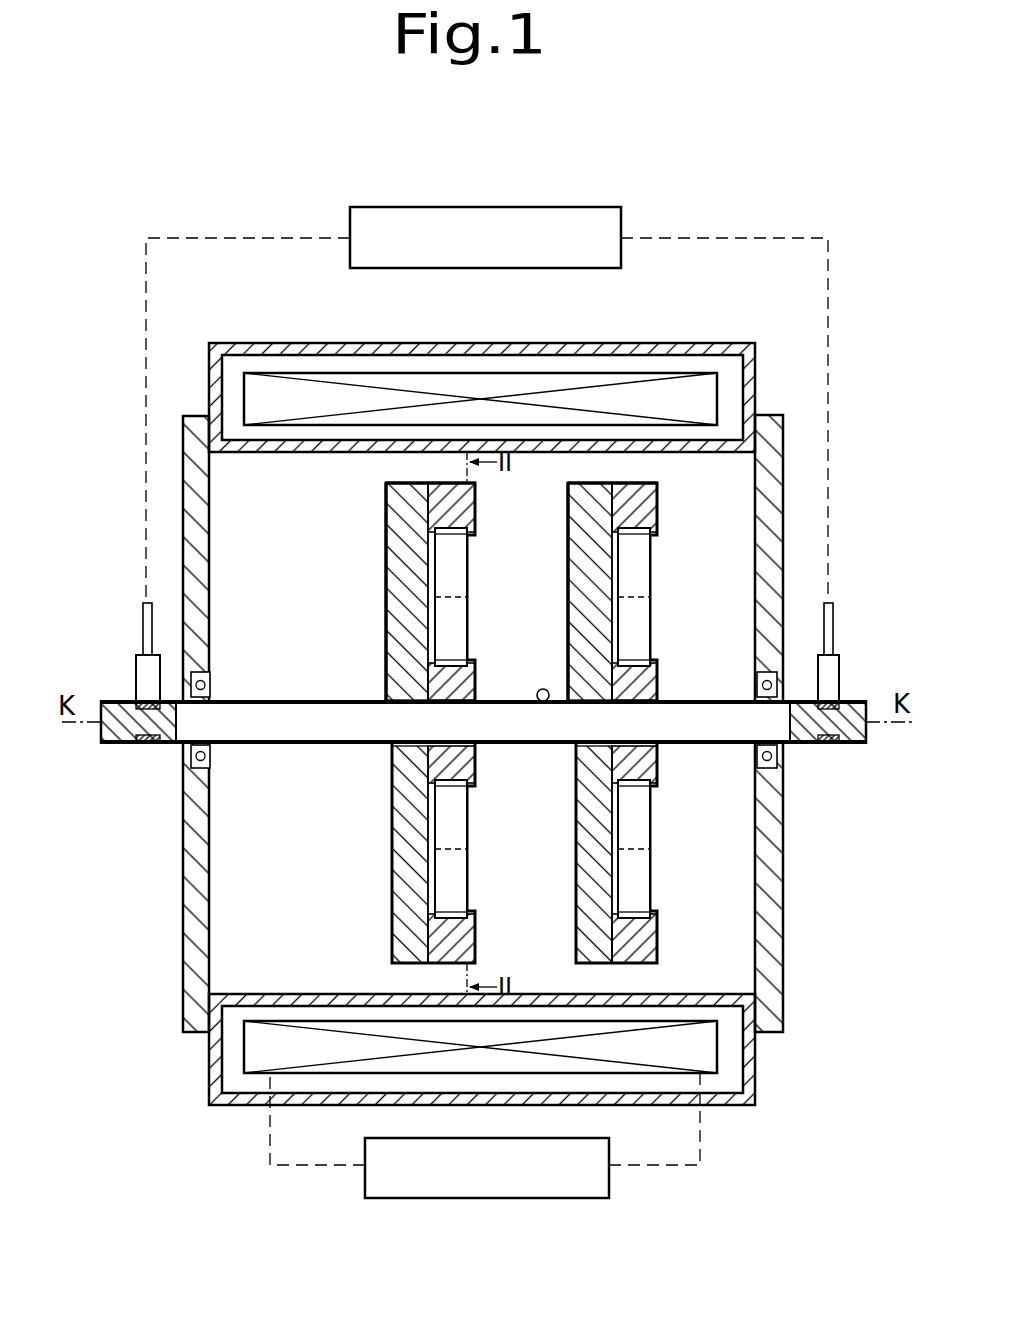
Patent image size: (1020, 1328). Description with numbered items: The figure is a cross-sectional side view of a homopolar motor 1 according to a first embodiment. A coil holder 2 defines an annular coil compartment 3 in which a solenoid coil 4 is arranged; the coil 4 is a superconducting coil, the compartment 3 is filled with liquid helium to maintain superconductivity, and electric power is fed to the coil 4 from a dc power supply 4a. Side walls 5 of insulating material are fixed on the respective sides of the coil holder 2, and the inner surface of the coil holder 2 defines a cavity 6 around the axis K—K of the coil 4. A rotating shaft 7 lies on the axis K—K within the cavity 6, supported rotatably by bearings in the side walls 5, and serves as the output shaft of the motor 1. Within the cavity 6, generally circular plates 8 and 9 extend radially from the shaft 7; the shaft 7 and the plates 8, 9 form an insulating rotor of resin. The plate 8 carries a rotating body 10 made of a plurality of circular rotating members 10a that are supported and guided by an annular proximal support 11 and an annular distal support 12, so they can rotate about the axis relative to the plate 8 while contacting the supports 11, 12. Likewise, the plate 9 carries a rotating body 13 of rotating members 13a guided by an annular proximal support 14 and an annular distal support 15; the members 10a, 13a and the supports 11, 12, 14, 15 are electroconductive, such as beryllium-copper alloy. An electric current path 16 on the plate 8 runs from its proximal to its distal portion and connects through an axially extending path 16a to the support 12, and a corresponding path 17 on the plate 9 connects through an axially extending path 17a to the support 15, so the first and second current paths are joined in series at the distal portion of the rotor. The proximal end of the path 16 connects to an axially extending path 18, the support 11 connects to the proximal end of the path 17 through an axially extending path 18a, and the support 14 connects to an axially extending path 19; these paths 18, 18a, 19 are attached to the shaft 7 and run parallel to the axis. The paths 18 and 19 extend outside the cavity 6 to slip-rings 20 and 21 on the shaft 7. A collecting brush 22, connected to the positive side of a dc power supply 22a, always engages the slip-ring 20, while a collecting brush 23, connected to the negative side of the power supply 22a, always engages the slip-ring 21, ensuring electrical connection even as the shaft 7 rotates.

The homopolar motor 1 is at (838, 336).
The coil holder 2 is at (753, 355).
The coil compartment 3 is at (727, 367).
The solenoid coil 4 is at (658, 377).
The dc power supply 4a is at (587, 1202).
The side walls 5 is at (185, 488).
The cavity 6 is at (740, 947).
The rotating shaft 7 is at (853, 735).
The circular plate 8 is at (400, 570).
The circular plate 9 is at (580, 569).
The rotating body 10 is at (489, 898).
The rotating members 10a is at (468, 605).
The annular proximal support 11 is at (477, 684).
The annular distal support 12 is at (468, 510).
The rotating body 13 is at (668, 891).
The rotating members 13a is at (650, 603).
The annular proximal support 14 is at (652, 684).
The annular distal support 15 is at (650, 510).
The electric current path 16 is at (386, 622).
The axially extending path 16a is at (397, 486).
The electric current path 17 is at (572, 628).
The axially extending path 17a is at (600, 484).
The axially extending path 18 is at (293, 700).
The axially extending path 18a is at (546, 705).
The axially extending path 19 is at (728, 700).
The slip-ring 20 is at (143, 745).
The slip-ring 21 is at (827, 745).
The collecting brush 22 is at (135, 675).
The dc power supply 22a is at (588, 205).
The collecting brush 23 is at (840, 673).